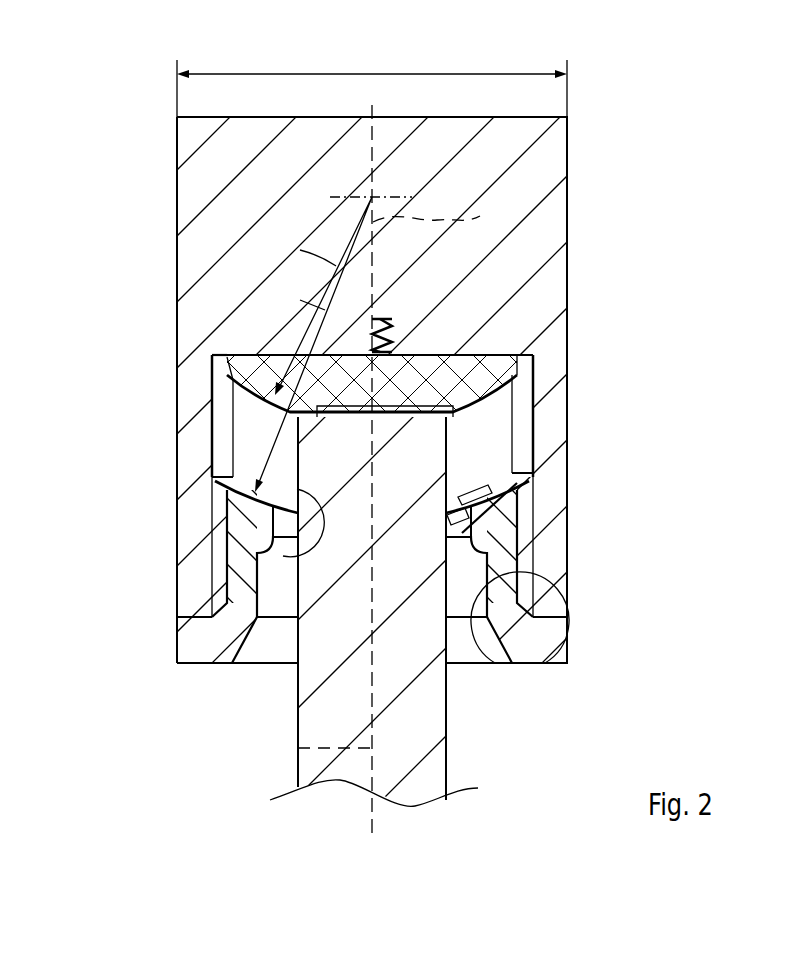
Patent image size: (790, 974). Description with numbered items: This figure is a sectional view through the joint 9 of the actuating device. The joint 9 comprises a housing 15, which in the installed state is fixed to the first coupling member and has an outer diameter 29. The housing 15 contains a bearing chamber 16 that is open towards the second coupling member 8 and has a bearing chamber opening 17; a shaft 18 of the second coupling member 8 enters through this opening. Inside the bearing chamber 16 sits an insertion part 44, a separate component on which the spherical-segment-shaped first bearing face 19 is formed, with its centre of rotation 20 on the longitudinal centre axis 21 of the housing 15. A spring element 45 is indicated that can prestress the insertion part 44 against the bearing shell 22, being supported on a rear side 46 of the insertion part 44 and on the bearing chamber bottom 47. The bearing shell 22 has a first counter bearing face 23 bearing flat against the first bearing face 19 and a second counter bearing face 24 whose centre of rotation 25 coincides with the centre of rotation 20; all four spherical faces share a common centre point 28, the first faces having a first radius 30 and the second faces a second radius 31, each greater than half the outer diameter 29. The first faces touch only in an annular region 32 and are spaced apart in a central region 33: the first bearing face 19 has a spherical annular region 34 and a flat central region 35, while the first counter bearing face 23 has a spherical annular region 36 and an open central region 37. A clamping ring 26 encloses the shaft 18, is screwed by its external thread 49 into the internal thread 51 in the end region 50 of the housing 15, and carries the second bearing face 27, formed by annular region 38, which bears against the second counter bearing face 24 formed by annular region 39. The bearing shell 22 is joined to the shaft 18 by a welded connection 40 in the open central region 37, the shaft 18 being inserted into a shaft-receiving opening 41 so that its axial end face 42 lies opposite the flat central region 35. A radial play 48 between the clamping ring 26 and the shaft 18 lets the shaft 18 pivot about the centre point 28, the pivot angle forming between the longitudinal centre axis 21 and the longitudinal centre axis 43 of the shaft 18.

The second coupling member 8 is at (458, 748).
The joint 9 is at (132, 126).
The housing 15 is at (170, 180).
The bearing chamber 16 is at (223, 457).
The bearing chamber opening 17 is at (523, 642).
The shaft 18 is at (430, 775).
The first bearing face 19 is at (525, 395).
The centre of rotation 20 is at (372, 197).
The longitudinal centre axis 21 is at (438, 215).
The bearing shell 22 is at (222, 440).
The first counter bearing face 23 is at (300, 372).
The second counter bearing face 24 is at (538, 500).
The centre of rotation 25 is at (313, 344).
The clamping ring 26 is at (167, 635).
The second bearing face 27 is at (225, 478).
The common centre point 28 is at (376, 196).
The outer diameter 29 is at (372, 74).
The first radius 30 is at (300, 250).
The second radius 31 is at (300, 300).
The annular region 32 is at (240, 413).
The central region 33 is at (347, 377).
The spherical-segment-shaped annular region 34 is at (455, 380).
The flat central region 35 is at (405, 363).
The spherical-segment-shaped annular region 36 is at (540, 440).
The open central region 37 is at (450, 380).
The spherical-segment-shaped annular region 38 is at (532, 527).
The spherical-segment-shaped annular region 39 is at (540, 462).
The welded connection 40 is at (395, 610).
The shaft-receiving opening 41 is at (257, 548).
The axial end face 42 is at (363, 420).
The longitudinal centre axis 43 is at (282, 749).
The insertion part 44 is at (202, 355).
The spring element 45 is at (380, 318).
The rear side 46 is at (503, 358).
The bearing chamber bottom 47 is at (230, 377).
The radial play 48 is at (277, 632).
The external thread 49 is at (563, 592).
The end region 50 is at (558, 552).
The internal thread 51 is at (483, 653).